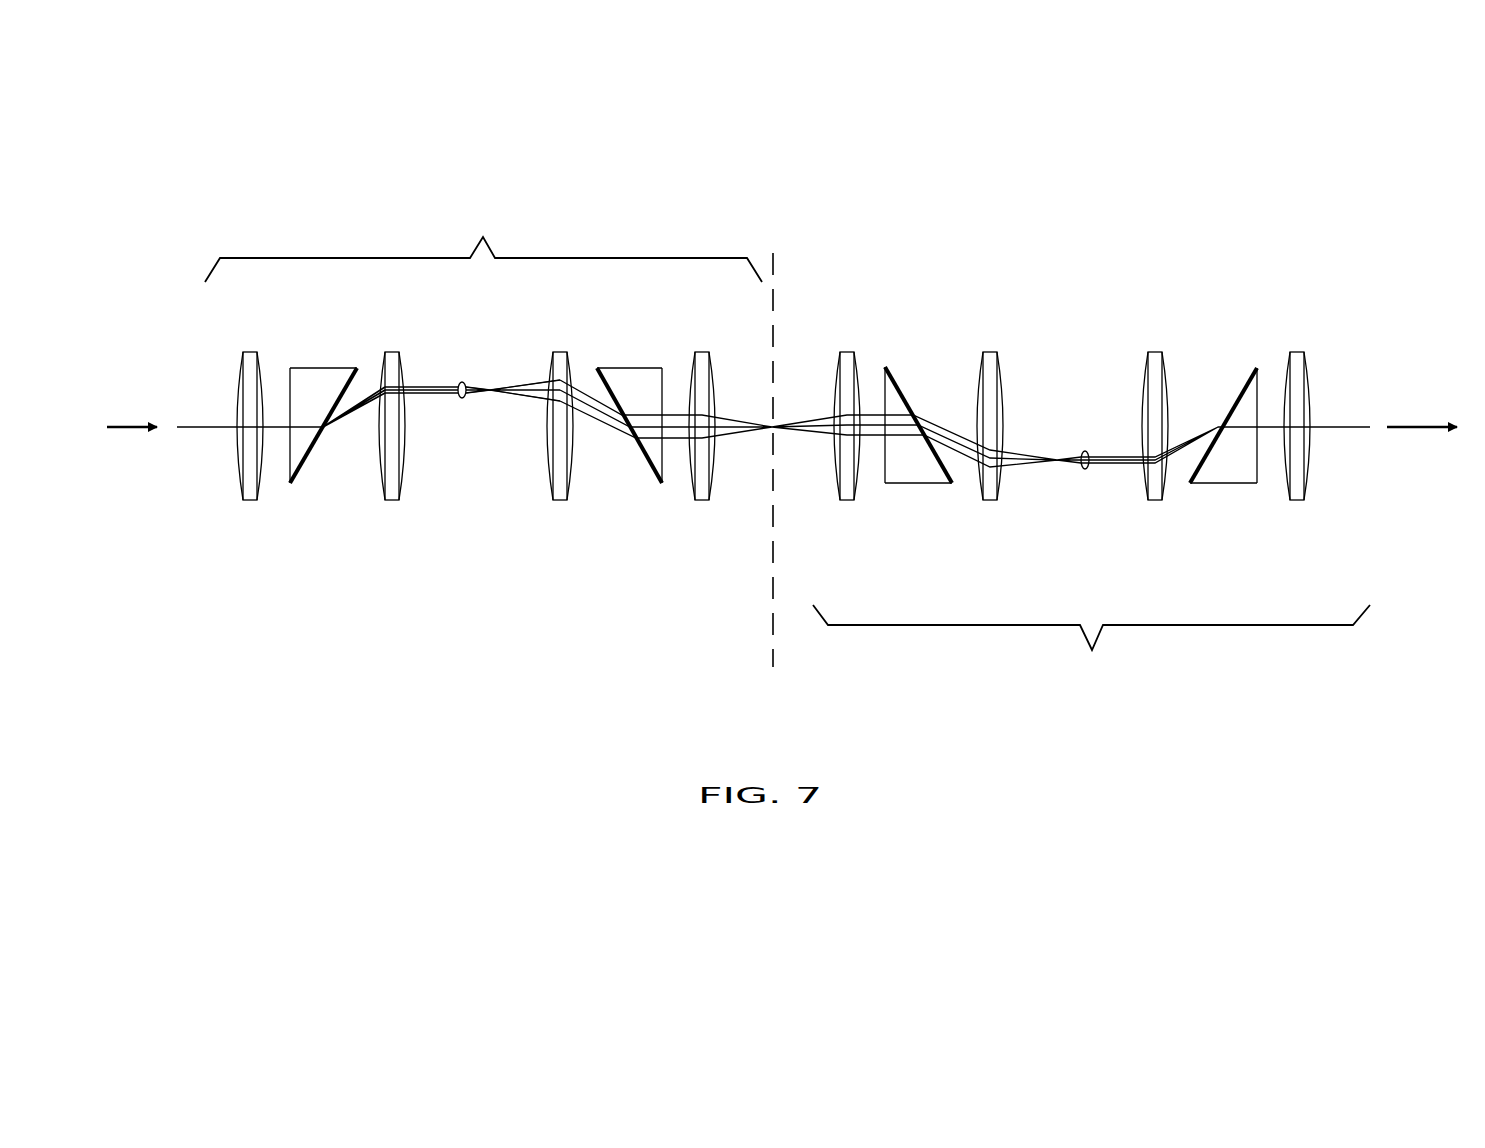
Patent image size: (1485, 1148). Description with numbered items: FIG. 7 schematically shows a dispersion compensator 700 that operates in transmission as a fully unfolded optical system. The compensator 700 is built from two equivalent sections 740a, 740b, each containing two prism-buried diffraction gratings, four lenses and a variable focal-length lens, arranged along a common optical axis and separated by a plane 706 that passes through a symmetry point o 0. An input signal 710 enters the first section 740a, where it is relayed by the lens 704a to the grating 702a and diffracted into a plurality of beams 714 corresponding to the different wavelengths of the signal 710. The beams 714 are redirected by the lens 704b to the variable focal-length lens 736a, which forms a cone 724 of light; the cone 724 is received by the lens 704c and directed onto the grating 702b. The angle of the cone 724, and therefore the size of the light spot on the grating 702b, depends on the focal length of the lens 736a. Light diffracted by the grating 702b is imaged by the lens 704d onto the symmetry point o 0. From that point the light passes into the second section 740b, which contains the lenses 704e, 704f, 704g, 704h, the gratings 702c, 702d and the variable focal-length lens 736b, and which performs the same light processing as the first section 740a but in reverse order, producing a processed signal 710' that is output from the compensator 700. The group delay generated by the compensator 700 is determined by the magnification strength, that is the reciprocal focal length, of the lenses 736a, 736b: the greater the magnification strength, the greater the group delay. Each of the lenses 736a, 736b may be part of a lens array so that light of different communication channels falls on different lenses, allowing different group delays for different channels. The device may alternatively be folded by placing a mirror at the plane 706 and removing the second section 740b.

The dispersion compensator 700 is at (343, 635).
The prism-buried diffraction grating 702a is at (317, 368).
The prism-buried diffraction grating 702b is at (623, 368).
The prism-buried diffraction grating 702c is at (885, 367).
The prism-buried diffraction grating 702d is at (1257, 368).
The lens 704a is at (250, 500).
The lens 704b is at (392, 500).
The lens 704c is at (560, 500).
The lens 704d is at (702, 500).
The lens 704e is at (847, 500).
The lens 704f is at (990, 500).
The lens 704g is at (1155, 500).
The lens 704h is at (1297, 500).
The plane 706 is at (773, 610).
The signal 710 is at (134, 443).
The processed signal 710' is at (1413, 436).
The beams 714 is at (355, 416).
The cone of light 724 is at (520, 396).
The variable focal-length lens 736a is at (462, 382).
The variable focal-length lens 736b is at (1085, 451).
The section 740a is at (483, 242).
The section 740b is at (1091, 647).
The point o 0 is at (777, 421).